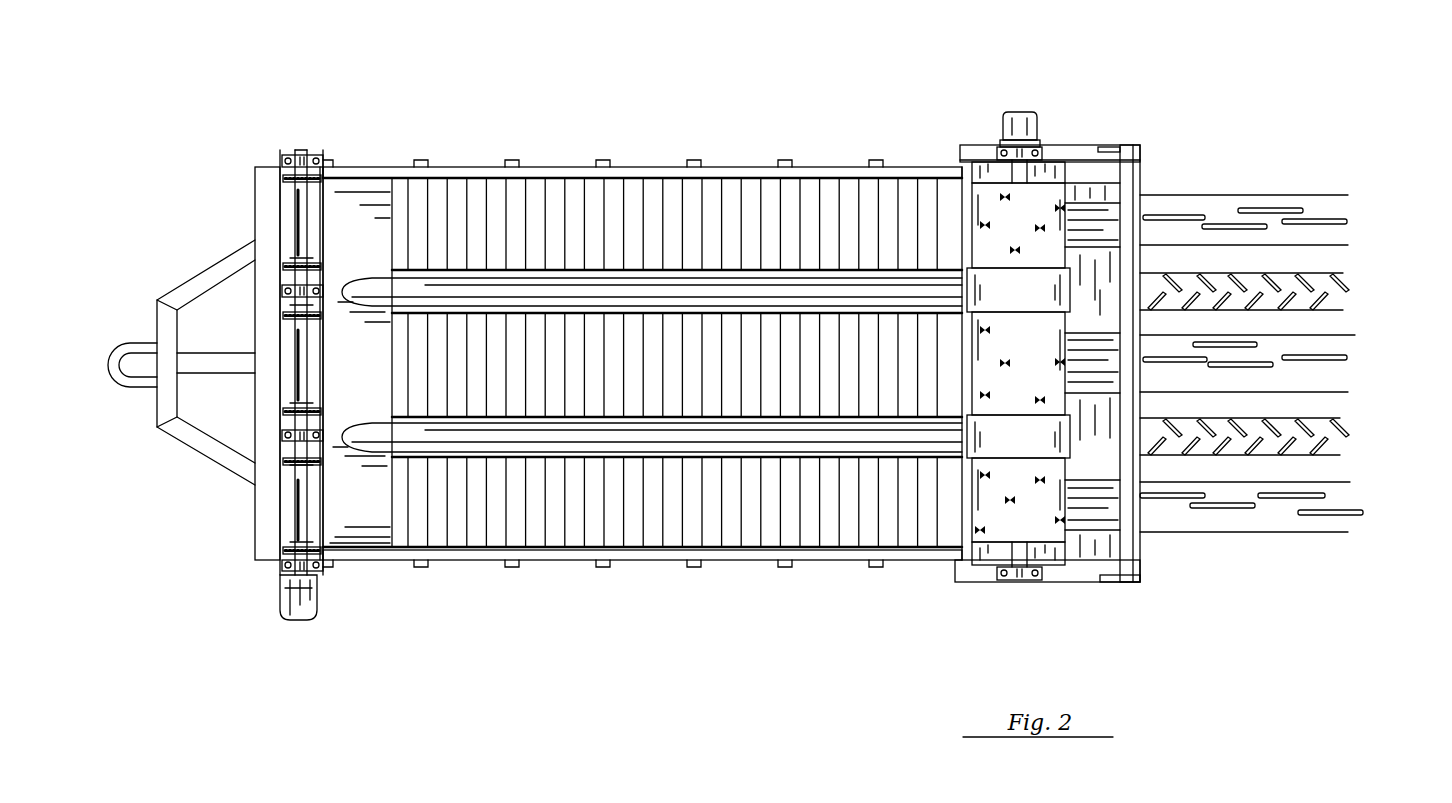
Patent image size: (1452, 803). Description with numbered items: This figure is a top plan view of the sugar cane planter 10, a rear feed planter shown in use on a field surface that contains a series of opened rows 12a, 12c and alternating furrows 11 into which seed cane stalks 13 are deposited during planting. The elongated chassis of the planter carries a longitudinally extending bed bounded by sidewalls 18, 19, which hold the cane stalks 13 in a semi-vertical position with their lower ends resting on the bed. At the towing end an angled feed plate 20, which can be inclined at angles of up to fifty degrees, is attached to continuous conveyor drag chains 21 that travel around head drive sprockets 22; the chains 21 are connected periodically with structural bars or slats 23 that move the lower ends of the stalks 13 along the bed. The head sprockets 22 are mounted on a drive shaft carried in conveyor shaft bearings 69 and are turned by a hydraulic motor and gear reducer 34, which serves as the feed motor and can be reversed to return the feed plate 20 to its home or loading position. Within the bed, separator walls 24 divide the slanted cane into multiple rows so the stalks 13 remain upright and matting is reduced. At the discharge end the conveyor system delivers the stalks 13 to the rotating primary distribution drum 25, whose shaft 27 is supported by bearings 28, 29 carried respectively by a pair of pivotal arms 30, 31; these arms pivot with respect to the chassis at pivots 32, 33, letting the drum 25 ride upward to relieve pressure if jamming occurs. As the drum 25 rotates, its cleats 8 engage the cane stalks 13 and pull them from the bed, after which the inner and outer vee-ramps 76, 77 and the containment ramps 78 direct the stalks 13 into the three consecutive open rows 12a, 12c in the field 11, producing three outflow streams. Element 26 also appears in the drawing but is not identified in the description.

The cleats 8 is at (985, 223).
The sugar cane planter 10 is at (708, 633).
The furrows 11 is at (1267, 339).
The opened row 12a is at (1238, 530).
The opened row 12c is at (1335, 201).
The cane stalks 13 is at (1170, 218).
The sidewall 18 is at (633, 172).
The sidewall 19 is at (478, 556).
The angled feed plate 20 is at (345, 200).
The continuous conveyor drag chains 21 is at (290, 155).
The head drive sprockets 22 is at (292, 265).
The slats 23 is at (535, 228).
The separator walls 24 is at (385, 290).
The primary distribution drum 25 is at (1004, 302).
The motor 26 is at (1020, 120).
The drum shaft 27 is at (1010, 560).
The bearing 28 is at (993, 580).
The bearing 29 is at (1003, 147).
The pivotal arm 30 is at (1065, 152).
The pivotal arm 31 is at (1055, 575).
The pivot 32 is at (1112, 148).
The pivot 33 is at (1105, 582).
The hydraulic motor and gear reducer 34 is at (292, 615).
The conveyor shaft bearings 69 is at (296, 300).
The inner vee-ramp 76 is at (1123, 163).
The outer vee-ramp 77 is at (1140, 318).
The containment ramps 78 is at (1097, 543).